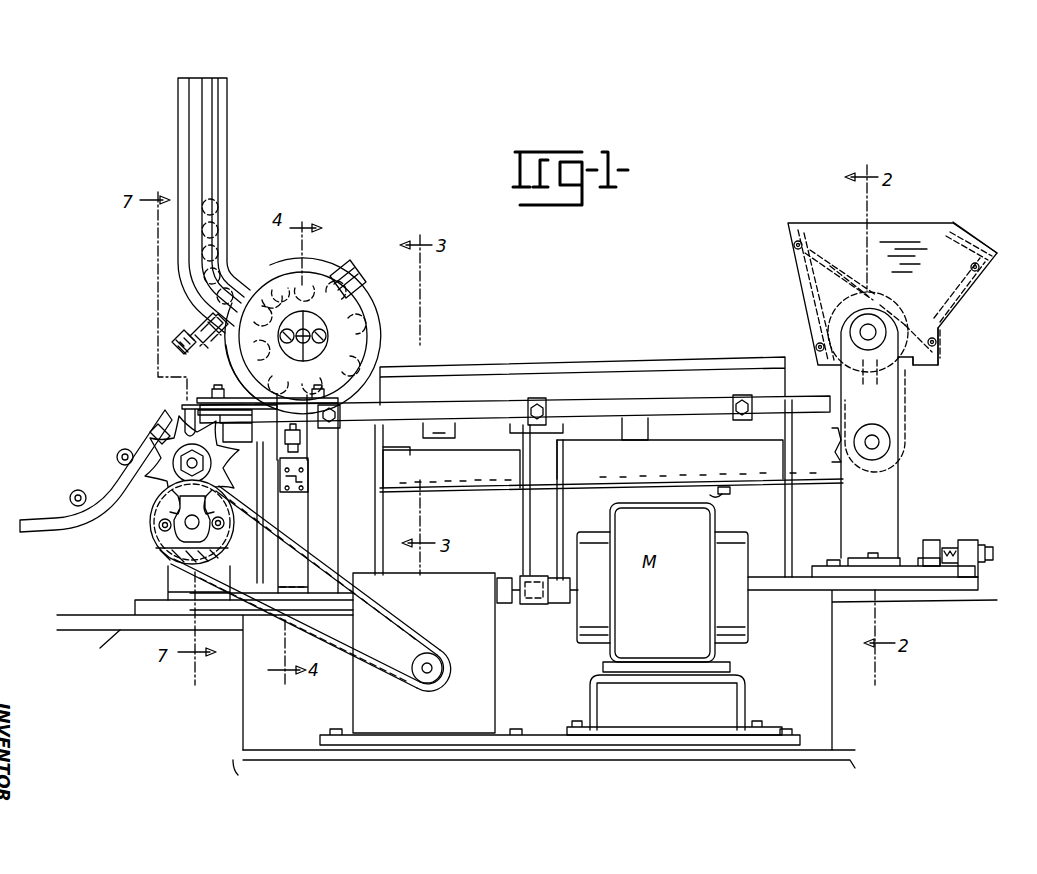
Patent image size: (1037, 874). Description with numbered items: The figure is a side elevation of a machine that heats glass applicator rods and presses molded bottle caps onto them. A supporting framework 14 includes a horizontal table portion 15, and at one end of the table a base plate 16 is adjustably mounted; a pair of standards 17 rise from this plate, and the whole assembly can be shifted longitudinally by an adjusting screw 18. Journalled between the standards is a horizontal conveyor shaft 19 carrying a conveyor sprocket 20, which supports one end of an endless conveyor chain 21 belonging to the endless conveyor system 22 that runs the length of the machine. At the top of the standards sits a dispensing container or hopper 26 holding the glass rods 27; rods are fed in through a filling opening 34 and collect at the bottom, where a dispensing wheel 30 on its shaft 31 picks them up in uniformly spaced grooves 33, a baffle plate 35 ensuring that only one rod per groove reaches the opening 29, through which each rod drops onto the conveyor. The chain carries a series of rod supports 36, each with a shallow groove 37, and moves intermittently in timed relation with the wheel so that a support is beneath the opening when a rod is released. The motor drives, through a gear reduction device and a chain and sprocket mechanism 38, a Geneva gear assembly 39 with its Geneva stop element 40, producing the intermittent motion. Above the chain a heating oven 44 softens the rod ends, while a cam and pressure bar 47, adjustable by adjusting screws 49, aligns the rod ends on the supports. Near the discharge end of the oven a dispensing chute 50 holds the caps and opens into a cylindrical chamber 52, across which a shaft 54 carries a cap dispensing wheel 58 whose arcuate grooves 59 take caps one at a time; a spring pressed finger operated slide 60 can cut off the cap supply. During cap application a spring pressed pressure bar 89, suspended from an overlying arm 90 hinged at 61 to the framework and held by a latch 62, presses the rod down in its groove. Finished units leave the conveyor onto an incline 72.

The supporting framework 14 is at (535, 520).
The horizontal table portion 15 is at (152, 598).
The base plate 16 is at (908, 570).
The standards 17 is at (898, 483).
The adjusting screw 18 is at (996, 553).
The horizontal conveyor shaft 19 is at (878, 438).
The conveyor sprocket 20 is at (830, 436).
The endless conveyor chain 21 is at (626, 478).
The endless conveyor system 22 is at (488, 496).
The dispensing container or hopper 26 is at (982, 294).
The glass rods 27 is at (936, 322).
The opening 29 is at (880, 380).
The dispensing wheel 30 is at (885, 302).
The shaft 31 is at (862, 332).
The grooves 33 is at (908, 322).
The filling opening 34 is at (960, 237).
The baffle plate 35 is at (832, 268).
The rod supports 36 is at (732, 491).
The shallow groove 37 is at (718, 500).
The chain and sprocket mechanism 38 is at (404, 618).
The Geneva gear assembly 39 is at (150, 492).
The Geneva stop element 40 is at (178, 530).
The heating oven 44 is at (593, 372).
The cam and pressure bar 47 is at (480, 410).
The adjusting screws 49 is at (537, 408).
The dispensing chute 50 is at (230, 121).
The cylindrical chamber 52 is at (352, 312).
The shaft 54 is at (280, 337).
The cap dispensing wheel 58 is at (312, 285).
The arcuate grooves 59 is at (277, 282).
The spring pressed finger operated slide 60 is at (193, 330).
The hinge 61 is at (309, 476).
The latch 62 is at (292, 424).
The incline 72 is at (108, 478).
The spring pressed pressure bar 89 is at (182, 406).
The overlying arm 90 is at (240, 386).